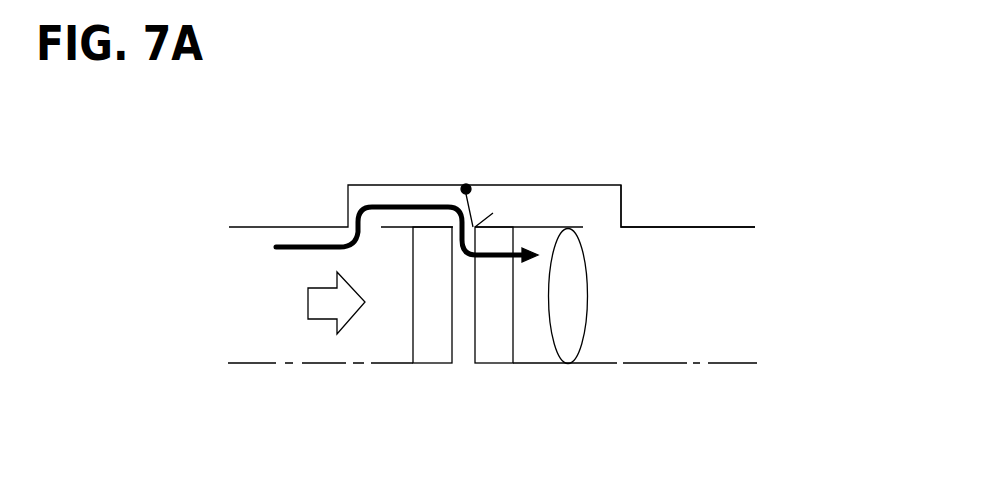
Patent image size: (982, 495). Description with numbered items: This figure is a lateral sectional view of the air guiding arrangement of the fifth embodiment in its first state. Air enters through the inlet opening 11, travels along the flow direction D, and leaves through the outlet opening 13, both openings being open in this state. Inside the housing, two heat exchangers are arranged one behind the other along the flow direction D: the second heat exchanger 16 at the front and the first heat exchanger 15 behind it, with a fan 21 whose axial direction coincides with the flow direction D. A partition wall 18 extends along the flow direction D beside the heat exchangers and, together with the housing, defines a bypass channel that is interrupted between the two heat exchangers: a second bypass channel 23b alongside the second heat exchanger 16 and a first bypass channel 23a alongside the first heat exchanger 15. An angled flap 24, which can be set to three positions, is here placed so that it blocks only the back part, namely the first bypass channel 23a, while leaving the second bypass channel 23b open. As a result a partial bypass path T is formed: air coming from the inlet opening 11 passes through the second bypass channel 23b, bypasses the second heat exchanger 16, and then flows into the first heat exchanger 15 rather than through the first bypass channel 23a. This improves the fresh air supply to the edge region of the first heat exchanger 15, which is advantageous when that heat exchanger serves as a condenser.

The inlet opening 11 is at (267, 319).
The outlet opening 13 is at (760, 312).
The first heat exchanger 15 is at (495, 348).
The second heat exchanger 16 is at (434, 347).
The partition wall 18 is at (400, 227).
The fan 21 is at (575, 318).
The first bypass channel 23a is at (518, 195).
The second bypass channel 23b is at (443, 192).
The flap 24 is at (473, 207).
The partial bypass path T is at (353, 212).
The flow direction D is at (312, 299).